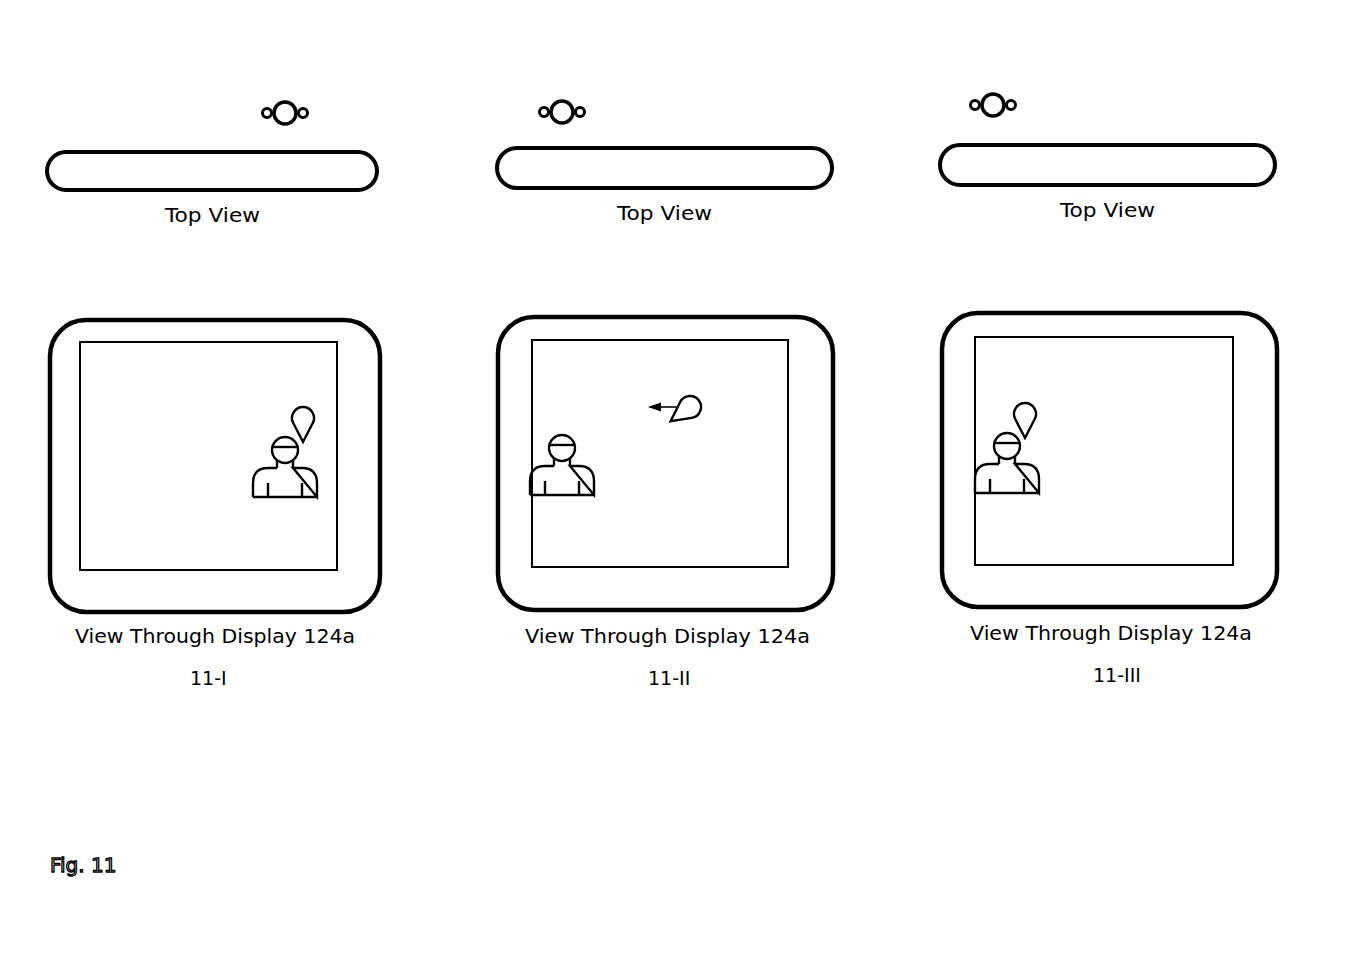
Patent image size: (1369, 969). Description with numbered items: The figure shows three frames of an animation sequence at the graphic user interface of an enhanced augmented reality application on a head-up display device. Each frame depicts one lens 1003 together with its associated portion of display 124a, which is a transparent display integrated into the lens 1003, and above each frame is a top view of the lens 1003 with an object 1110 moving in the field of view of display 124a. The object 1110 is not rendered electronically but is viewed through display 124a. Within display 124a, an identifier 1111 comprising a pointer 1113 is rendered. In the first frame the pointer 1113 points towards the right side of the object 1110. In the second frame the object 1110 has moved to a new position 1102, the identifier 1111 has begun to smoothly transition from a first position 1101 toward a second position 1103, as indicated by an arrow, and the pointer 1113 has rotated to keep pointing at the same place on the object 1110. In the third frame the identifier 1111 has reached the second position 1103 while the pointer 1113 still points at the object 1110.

The lens 1003 is at (226, 184).
The display 124a is at (334, 561).
The object 1110 is at (263, 112).
The first position 1101 is at (300, 403).
The second position 1103 is at (1032, 398).
The identifier 1111 is at (315, 417).
The pointer 1113 is at (303, 440).
The new position 1102 is at (563, 497).